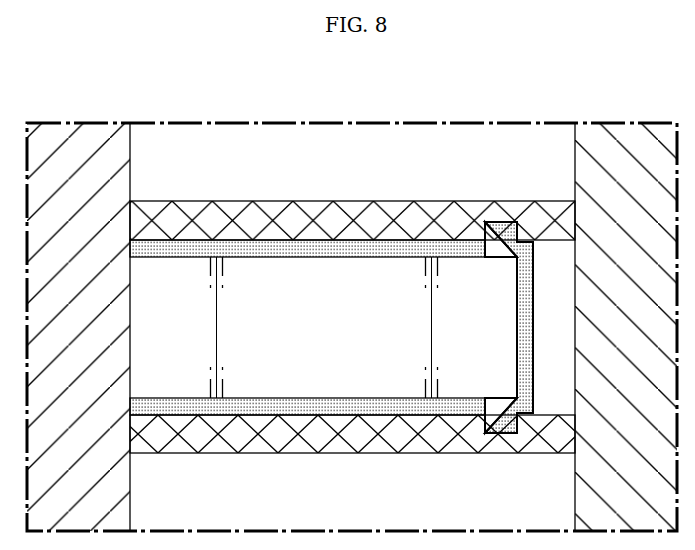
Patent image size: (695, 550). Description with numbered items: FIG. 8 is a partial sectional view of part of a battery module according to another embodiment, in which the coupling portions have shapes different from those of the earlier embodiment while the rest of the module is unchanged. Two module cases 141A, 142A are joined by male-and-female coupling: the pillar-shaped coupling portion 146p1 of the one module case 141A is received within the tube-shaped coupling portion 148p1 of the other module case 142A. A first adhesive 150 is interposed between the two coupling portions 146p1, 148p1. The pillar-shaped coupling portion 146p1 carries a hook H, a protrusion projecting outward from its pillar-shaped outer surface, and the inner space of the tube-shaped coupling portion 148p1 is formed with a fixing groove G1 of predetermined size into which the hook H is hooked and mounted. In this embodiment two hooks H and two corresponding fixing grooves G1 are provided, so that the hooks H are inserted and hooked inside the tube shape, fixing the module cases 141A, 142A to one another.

The module case 141A is at (85, 132).
The module case 142A is at (620, 132).
The coupling portion 148p1 is at (220, 201).
The coupling portion 146p1 is at (308, 278).
The first adhesive 150 is at (392, 248).
The fixing groove G1 is at (524, 232).
The hook H is at (493, 243).